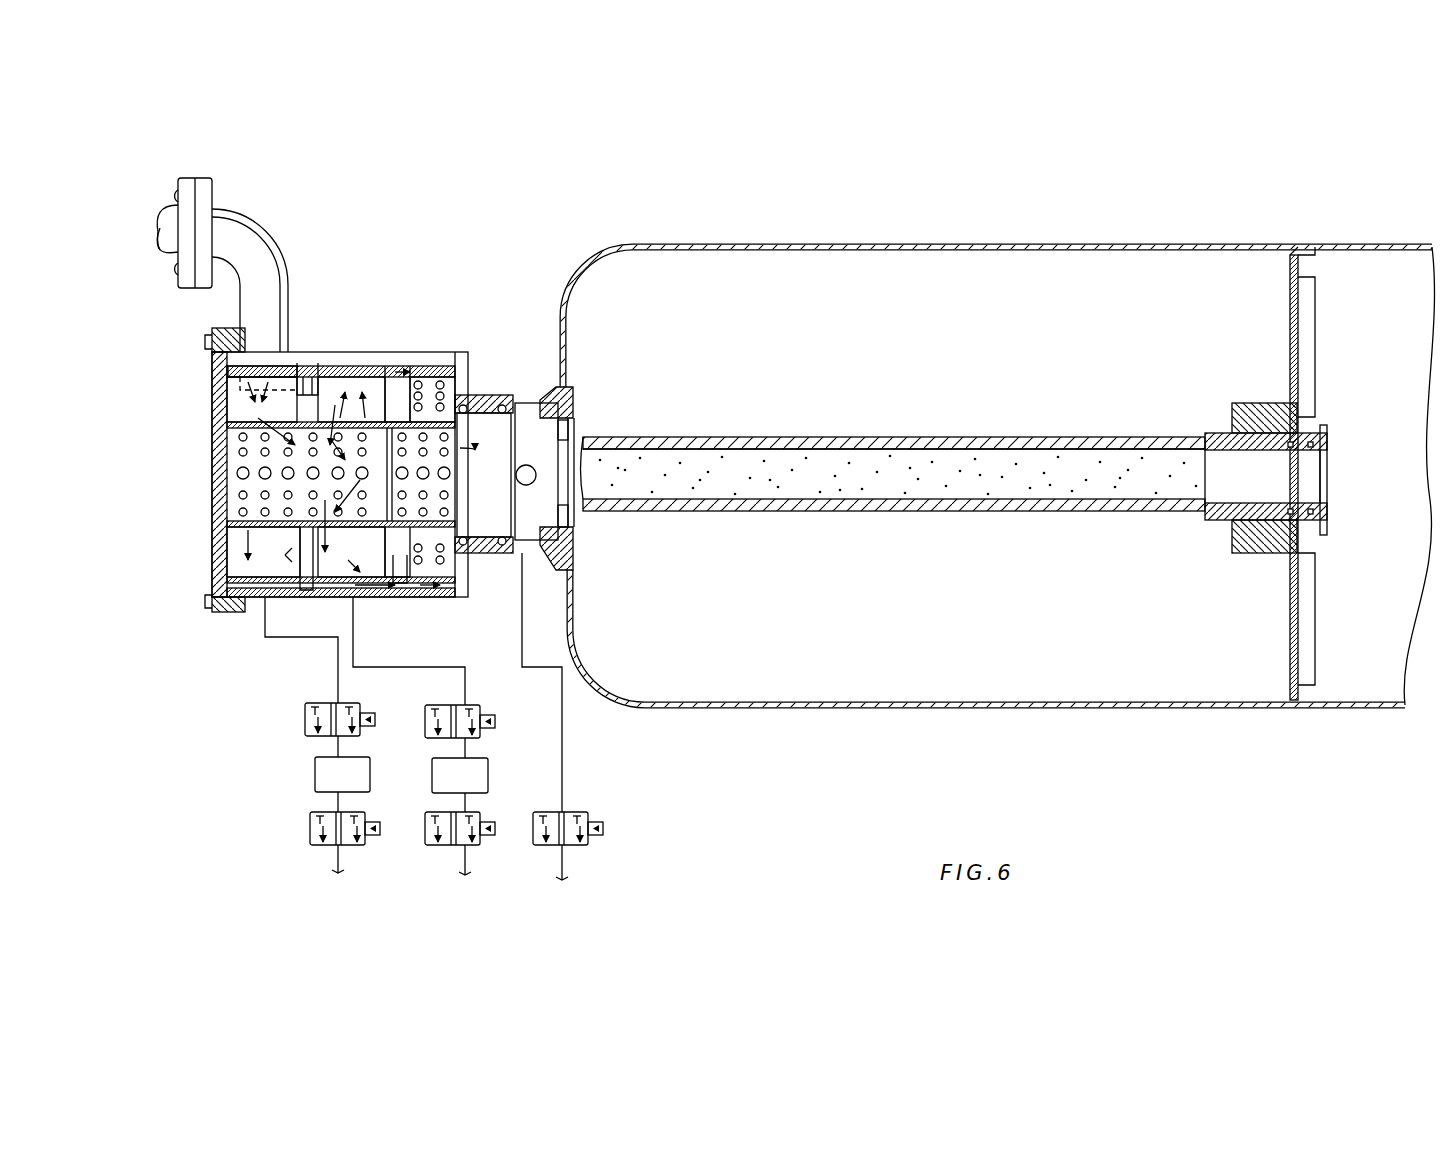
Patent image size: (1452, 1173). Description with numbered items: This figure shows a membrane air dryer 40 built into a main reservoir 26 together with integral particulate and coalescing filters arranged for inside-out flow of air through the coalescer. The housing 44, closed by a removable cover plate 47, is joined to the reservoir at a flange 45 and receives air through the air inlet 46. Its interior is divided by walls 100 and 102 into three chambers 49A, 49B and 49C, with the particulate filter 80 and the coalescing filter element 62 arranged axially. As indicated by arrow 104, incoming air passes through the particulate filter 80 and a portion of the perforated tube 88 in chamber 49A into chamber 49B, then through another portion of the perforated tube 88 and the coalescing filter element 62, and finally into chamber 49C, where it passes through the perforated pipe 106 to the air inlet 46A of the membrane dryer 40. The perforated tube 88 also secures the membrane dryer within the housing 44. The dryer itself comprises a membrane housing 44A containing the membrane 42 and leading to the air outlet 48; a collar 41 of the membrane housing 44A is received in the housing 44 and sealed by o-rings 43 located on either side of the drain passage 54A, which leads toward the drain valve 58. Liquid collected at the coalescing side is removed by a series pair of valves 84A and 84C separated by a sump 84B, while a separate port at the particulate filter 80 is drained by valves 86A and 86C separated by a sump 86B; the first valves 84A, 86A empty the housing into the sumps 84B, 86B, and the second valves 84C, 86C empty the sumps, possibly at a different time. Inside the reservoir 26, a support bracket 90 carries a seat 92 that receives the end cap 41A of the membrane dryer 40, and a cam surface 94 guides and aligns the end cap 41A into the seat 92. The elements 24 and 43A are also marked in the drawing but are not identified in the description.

The tank wall 24 is at (573, 570).
The main reservoir 26 is at (1055, 246).
The membrane air dryer 40 is at (1006, 380).
The collar 41 is at (560, 393).
The end cap 41A is at (1215, 523).
The membrane separator 42 is at (1075, 458).
The sealing means 43 is at (573, 538).
The end fitting 43A is at (1323, 517).
The housing 44 is at (467, 360).
The membrane housing 44A is at (798, 437).
The flange 45 is at (335, 590).
The air inlet 46 is at (207, 232).
The air inlet of membrane housing 46A is at (470, 392).
The cover plate 47 is at (219, 514).
The air outlet 48 is at (1327, 460).
The first chamber 49A is at (243, 362).
The second chamber 49B is at (353, 390).
The third chamber 49C is at (420, 376).
The drain passage 54A is at (528, 473).
The valve 58 is at (583, 847).
The coalescing filter element 62 is at (340, 372).
The particulate filter 80 is at (247, 393).
The valve 84A is at (317, 703).
The sump 84B is at (315, 775).
The valve 84C is at (318, 833).
The valve 86A is at (443, 705).
The sump 86B is at (490, 776).
The valve 86C is at (440, 847).
The perforated tube 88 is at (240, 420).
The support bracket 90 is at (1312, 350).
The seat 92 is at (1273, 545).
The cam surface 94 is at (1240, 420).
The wall 100 is at (264, 546).
The wall 102 is at (379, 542).
The arrow 104 is at (337, 458).
The perforated pipe 106 is at (435, 373).